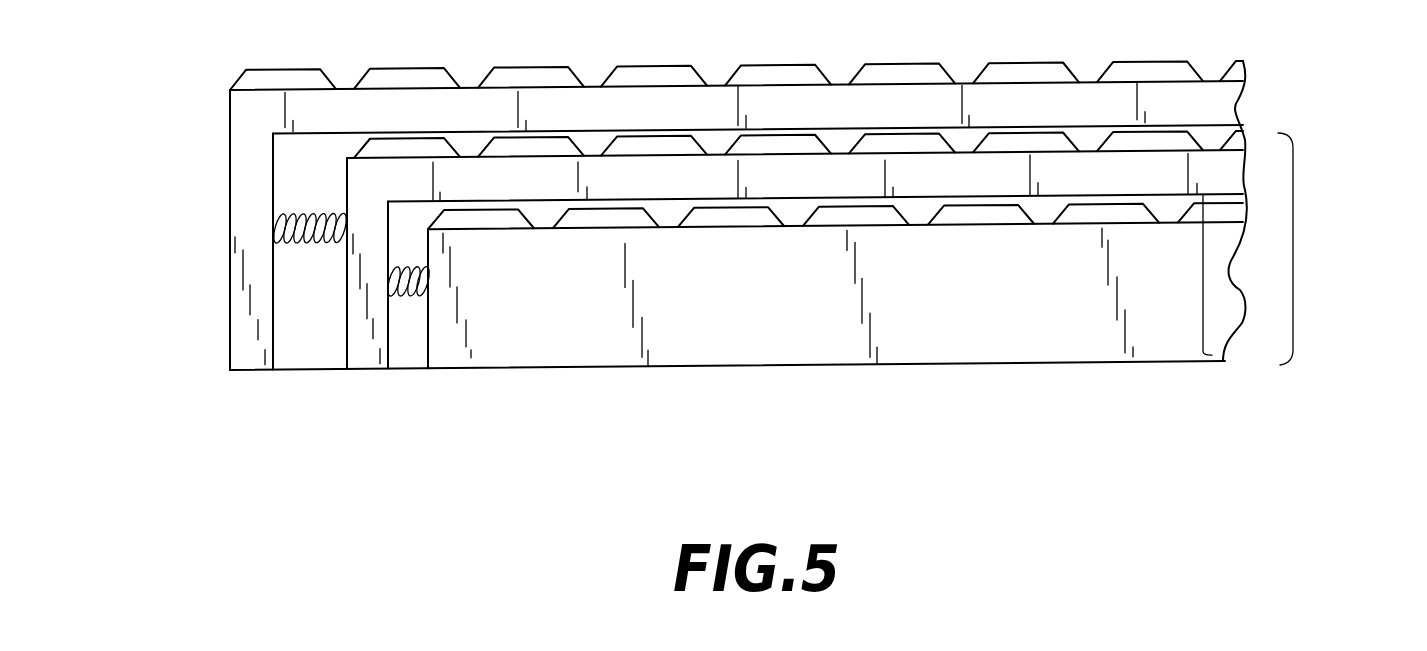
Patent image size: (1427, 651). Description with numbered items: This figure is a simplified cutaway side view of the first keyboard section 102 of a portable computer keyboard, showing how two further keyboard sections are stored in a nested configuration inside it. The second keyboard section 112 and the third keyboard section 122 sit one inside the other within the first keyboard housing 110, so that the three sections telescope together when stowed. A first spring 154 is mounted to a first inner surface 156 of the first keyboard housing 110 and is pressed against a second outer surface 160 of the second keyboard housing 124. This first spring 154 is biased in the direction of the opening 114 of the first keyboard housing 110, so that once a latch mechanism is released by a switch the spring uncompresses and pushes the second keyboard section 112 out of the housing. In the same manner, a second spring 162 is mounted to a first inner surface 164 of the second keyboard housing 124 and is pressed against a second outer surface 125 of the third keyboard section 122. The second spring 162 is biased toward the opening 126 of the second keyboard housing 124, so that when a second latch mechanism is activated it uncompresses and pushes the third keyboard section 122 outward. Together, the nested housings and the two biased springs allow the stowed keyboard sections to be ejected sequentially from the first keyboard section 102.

The first keyboard section 102 is at (1230, 105).
The first keyboard housing 110 is at (247, 123).
The second keyboard section 112 is at (1240, 140).
The opening 114 is at (1293, 252).
The third keyboard section 122 is at (1213, 203).
The second keyboard housing 124 is at (388, 342).
The second outer surface 125 is at (430, 345).
The opening 126 is at (1203, 268).
The first spring 154 is at (307, 216).
The first inner surface 156 is at (275, 307).
The second outer surface 160 is at (347, 307).
The second spring 162 is at (430, 343).
The first inner surface 164 is at (400, 297).